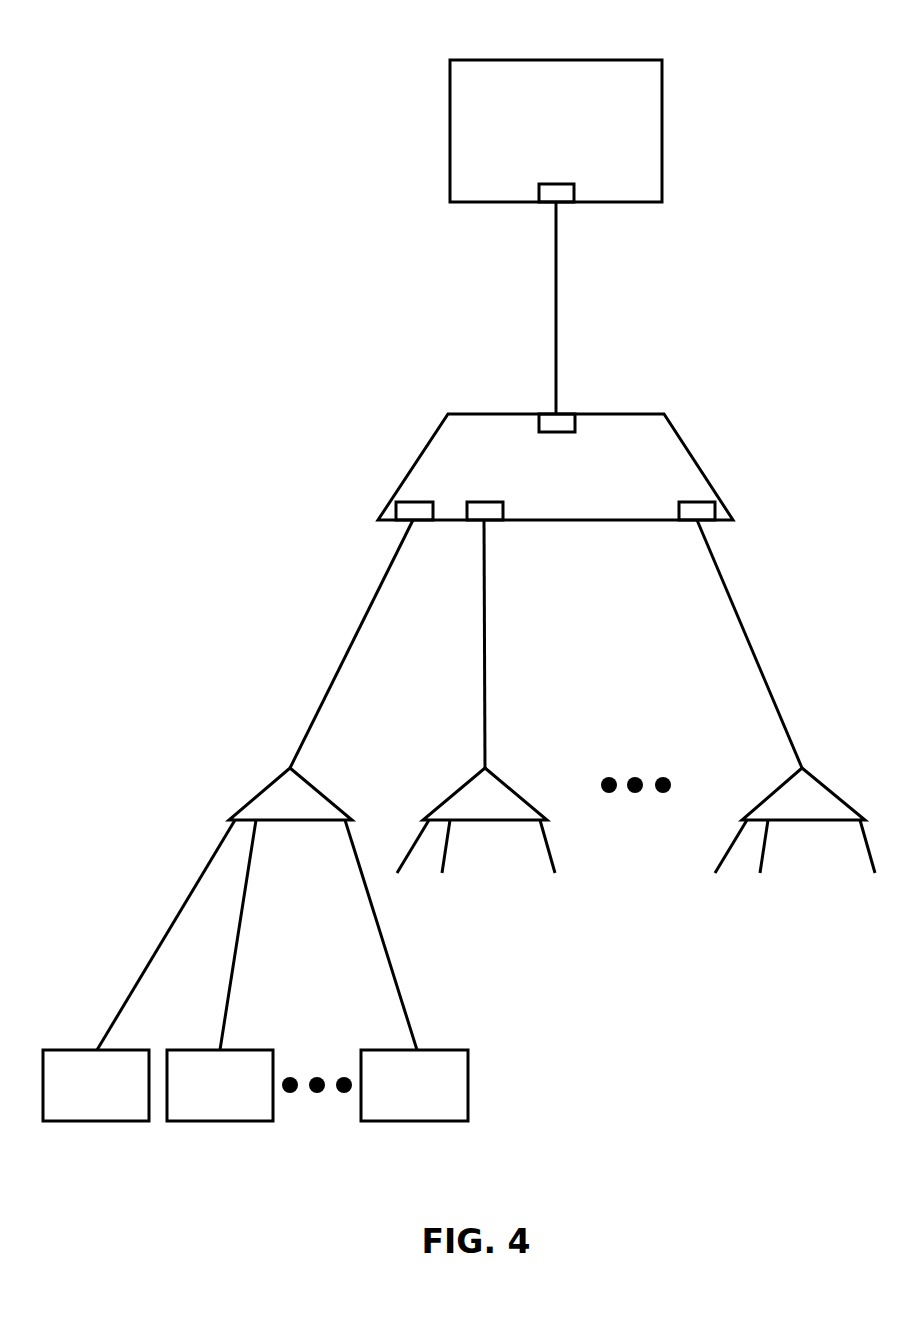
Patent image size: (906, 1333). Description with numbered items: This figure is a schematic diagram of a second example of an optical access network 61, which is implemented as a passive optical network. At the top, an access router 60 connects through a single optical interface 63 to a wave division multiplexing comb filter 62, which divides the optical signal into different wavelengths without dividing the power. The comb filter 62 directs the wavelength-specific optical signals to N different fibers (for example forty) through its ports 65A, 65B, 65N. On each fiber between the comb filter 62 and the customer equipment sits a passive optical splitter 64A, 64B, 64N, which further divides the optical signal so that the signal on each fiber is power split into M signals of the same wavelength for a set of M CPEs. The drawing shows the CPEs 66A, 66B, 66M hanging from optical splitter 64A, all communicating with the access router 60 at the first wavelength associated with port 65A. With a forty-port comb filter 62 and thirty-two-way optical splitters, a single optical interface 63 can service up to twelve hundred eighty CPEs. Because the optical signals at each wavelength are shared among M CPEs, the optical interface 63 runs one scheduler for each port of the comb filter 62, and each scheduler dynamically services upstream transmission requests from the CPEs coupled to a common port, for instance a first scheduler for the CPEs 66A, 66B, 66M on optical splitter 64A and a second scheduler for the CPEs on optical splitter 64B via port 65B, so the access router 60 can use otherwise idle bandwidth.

The access router 60 is at (556, 131).
The optical access network 61 is at (735, 60).
The comb filter 62 is at (555, 467).
The optical interface 63 is at (563, 203).
The optical splitter 64A is at (275, 782).
The optical splitter 64B is at (470, 782).
The optical splitter 64N is at (787, 782).
The port 65A is at (399, 522).
The port 65B is at (491, 520).
The port 65N is at (712, 521).
The CPE 66A is at (96, 1085).
The CPE 66B is at (220, 1085).
The CPE 66M is at (414, 1085).